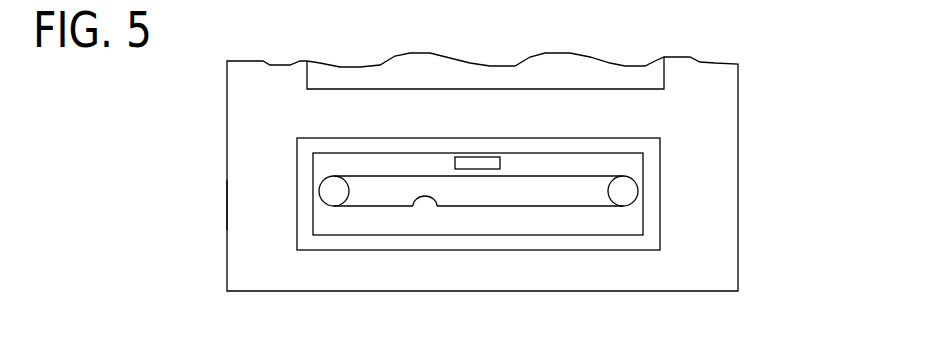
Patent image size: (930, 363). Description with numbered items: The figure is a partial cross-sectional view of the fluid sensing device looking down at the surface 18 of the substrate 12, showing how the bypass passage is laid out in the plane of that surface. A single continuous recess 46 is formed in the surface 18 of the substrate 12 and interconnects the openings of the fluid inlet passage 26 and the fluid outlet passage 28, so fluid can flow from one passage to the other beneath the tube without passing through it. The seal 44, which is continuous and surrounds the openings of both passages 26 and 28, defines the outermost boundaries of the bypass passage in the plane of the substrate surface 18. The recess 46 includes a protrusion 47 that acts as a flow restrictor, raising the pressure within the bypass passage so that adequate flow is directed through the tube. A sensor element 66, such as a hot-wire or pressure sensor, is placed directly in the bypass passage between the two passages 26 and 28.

The substrate 12 is at (739, 164).
The surface 18 is at (237, 205).
The fluid inlet passage 26 is at (328, 190).
The fluid outlet passage 28 is at (630, 191).
The seal 44 is at (592, 245).
The recess 46 is at (528, 197).
The protrusion 47 is at (425, 197).
The sensor element 66 is at (473, 163).